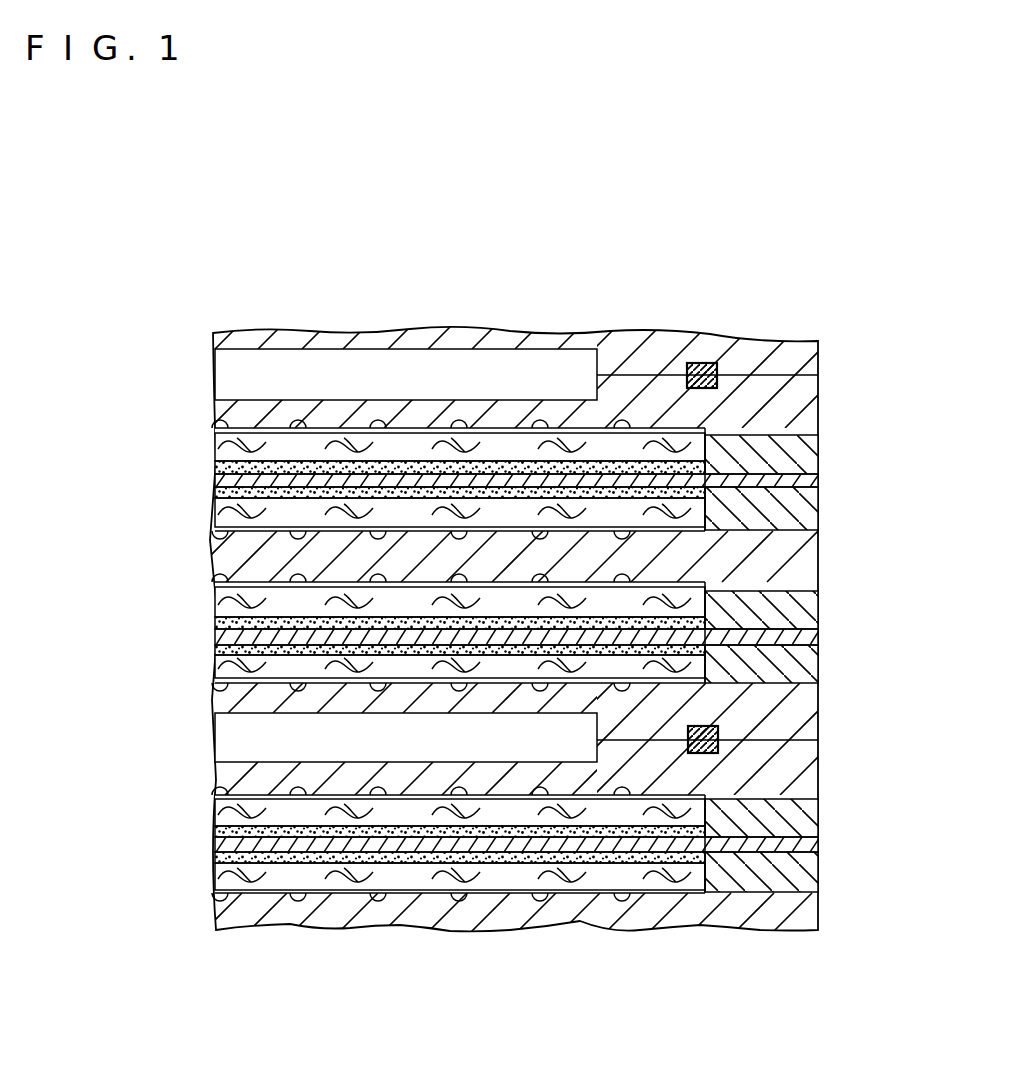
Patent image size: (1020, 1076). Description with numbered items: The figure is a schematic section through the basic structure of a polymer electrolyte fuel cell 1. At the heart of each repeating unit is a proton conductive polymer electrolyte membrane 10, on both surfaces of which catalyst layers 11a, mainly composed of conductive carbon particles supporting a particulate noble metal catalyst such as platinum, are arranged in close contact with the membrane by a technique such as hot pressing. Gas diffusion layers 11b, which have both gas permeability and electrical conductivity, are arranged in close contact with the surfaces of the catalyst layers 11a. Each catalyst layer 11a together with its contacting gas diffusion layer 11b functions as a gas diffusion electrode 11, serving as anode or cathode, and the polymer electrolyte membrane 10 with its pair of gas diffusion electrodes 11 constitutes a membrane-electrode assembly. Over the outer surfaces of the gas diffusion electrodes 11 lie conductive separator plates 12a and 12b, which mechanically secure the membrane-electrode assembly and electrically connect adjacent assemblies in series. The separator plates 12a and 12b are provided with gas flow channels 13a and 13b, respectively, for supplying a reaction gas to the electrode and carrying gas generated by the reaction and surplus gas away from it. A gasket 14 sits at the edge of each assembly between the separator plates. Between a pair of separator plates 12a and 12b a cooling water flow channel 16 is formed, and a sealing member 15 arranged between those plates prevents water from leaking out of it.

The polymer electrolyte fuel cell 1 is at (773, 290).
The proton conductive polymer electrolyte membrane 10 is at (755, 845).
The gas diffusion electrode 11 is at (460, 734).
The catalyst layer 11a is at (338, 985).
The gas diffusion layer 11b is at (375, 876).
The conductive separator plate 12a is at (803, 782).
The conductive separator plate 12b is at (805, 920).
The gas flow channel 13a is at (303, 792).
The gas flow channel 13b is at (297, 900).
The gasket 14 is at (803, 512).
The sealing member 15 is at (700, 363).
The cooling water flow channel 16 is at (245, 375).